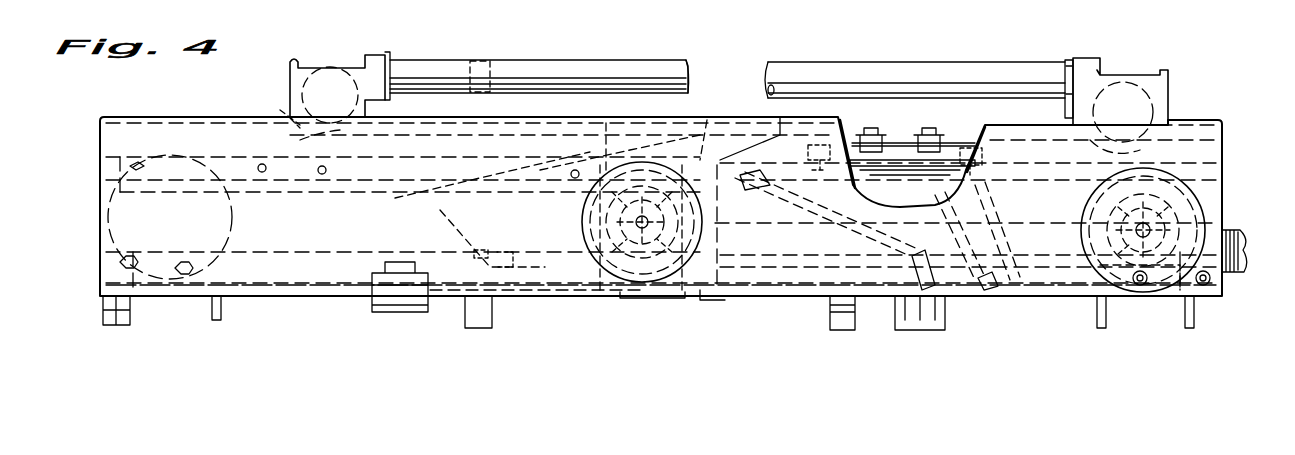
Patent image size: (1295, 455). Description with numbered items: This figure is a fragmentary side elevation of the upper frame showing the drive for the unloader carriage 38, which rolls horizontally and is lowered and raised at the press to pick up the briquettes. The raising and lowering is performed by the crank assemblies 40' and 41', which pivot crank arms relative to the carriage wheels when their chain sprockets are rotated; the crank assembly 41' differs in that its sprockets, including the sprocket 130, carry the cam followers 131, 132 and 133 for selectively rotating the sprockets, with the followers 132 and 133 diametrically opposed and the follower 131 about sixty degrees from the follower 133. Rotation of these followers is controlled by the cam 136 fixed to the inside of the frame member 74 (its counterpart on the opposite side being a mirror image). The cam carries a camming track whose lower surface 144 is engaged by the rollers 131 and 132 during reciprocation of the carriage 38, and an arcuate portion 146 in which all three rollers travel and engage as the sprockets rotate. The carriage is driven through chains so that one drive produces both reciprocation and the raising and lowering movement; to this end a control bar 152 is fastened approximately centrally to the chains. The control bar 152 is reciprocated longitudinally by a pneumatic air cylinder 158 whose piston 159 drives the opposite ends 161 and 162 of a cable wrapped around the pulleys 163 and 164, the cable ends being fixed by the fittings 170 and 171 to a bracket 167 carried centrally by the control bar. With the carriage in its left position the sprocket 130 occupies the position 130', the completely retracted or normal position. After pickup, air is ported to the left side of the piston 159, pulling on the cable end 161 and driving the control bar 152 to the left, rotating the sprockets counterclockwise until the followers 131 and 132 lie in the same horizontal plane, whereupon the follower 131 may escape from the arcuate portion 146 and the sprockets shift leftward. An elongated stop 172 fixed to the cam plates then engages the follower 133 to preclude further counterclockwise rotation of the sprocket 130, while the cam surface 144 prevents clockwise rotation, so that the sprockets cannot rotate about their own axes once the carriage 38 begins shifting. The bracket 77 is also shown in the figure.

The frame member 74 is at (310, 265).
The bracket 77 is at (1198, 122).
The carriage 38 is at (876, 32).
The crank assembly 40' is at (1180, 222).
The crank assembly 41' is at (653, 314).
The sprocket 130 is at (642, 249).
The sprocket position 130' is at (170, 179).
The cam follower 131 is at (620, 134).
The cam follower 132 is at (708, 118).
The cam follower 133 is at (582, 230).
The cam 136 is at (442, 212).
The lower surface 144 is at (395, 199).
The arcuate portion 146 is at (705, 296).
The control bar 152 is at (880, 160).
The pneumatic air cylinder 158 is at (555, 50).
The piston 159 is at (462, 56).
The cable end 161 is at (292, 138).
The cable end 162 is at (1148, 152).
The pulley 163 is at (275, 100).
The pulley 164 is at (1148, 100).
The bracket 167 is at (862, 130).
The fitting 170 is at (912, 161).
The fitting 171 is at (920, 138).
The elongated stop 172 is at (542, 292).